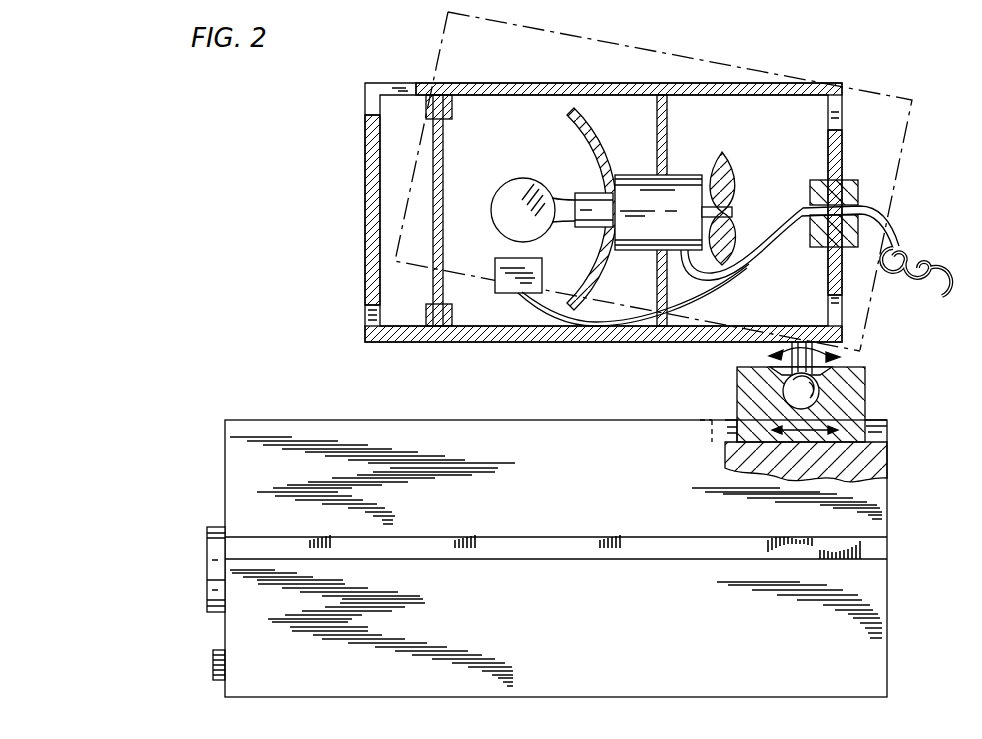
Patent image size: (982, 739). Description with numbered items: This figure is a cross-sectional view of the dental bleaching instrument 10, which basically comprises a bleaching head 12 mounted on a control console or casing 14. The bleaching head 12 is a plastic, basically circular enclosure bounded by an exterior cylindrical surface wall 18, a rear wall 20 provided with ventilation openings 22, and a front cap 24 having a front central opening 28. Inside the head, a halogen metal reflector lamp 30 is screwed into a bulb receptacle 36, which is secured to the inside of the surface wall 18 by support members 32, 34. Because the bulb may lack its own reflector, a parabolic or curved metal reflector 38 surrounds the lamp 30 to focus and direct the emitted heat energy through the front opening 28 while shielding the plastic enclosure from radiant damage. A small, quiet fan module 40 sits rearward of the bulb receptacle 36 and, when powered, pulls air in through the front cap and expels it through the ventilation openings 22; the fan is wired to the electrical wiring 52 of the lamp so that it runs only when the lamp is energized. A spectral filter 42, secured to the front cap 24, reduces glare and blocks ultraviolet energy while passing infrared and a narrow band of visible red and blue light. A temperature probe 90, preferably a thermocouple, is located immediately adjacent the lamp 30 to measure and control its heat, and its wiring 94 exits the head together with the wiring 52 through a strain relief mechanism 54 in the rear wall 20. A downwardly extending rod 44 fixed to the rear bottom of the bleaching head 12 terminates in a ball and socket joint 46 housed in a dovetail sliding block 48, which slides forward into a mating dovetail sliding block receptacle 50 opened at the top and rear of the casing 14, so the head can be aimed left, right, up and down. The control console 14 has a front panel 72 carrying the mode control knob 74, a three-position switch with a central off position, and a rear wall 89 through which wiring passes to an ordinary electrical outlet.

The dental bleaching instrument 10 is at (273, 366).
The bleaching head 12 is at (397, 78).
The control console 14 is at (273, 420).
The exterior cylindrical surface wall 18 is at (565, 342).
The rear wall 20 is at (840, 93).
The ventilation openings 22 is at (837, 300).
The front cap 24 is at (400, 342).
The front central opening 28 is at (365, 178).
The halogen metal reflector lamp 30 is at (503, 185).
The support member 32 is at (669, 112).
The support member 34 is at (658, 291).
The bulb receptacle 36 is at (628, 174).
The metal reflector 38 is at (576, 122).
The fan module 40 is at (708, 160).
The spectral filter 42 is at (438, 342).
The rod 44 is at (813, 357).
The ball and socket joint 46 is at (820, 394).
The dovetail sliding block 48 is at (860, 410).
The dovetail sliding block receptacle 50 is at (887, 432).
The electrical wiring 52 is at (885, 222).
The strain relief mechanism 54 is at (872, 163).
The front panel 72 is at (225, 448).
The mode control knob 74 is at (210, 527).
The rear wall of control console 89 is at (887, 505).
The temperature probe 90 is at (497, 293).
The wiring 94 is at (615, 340).